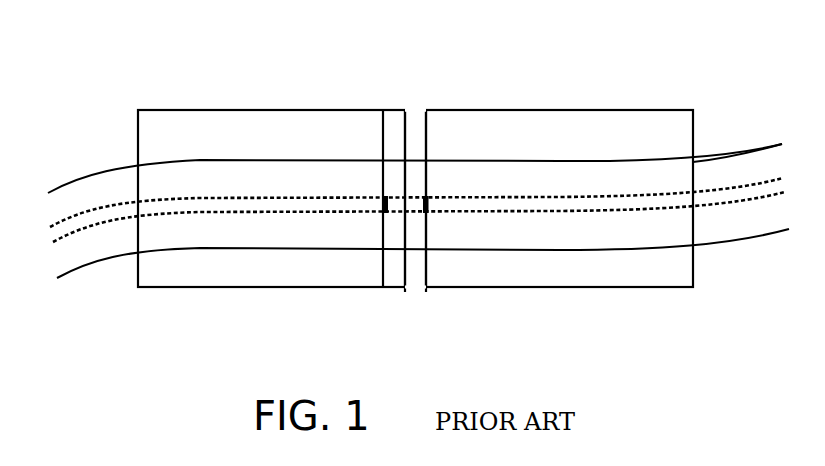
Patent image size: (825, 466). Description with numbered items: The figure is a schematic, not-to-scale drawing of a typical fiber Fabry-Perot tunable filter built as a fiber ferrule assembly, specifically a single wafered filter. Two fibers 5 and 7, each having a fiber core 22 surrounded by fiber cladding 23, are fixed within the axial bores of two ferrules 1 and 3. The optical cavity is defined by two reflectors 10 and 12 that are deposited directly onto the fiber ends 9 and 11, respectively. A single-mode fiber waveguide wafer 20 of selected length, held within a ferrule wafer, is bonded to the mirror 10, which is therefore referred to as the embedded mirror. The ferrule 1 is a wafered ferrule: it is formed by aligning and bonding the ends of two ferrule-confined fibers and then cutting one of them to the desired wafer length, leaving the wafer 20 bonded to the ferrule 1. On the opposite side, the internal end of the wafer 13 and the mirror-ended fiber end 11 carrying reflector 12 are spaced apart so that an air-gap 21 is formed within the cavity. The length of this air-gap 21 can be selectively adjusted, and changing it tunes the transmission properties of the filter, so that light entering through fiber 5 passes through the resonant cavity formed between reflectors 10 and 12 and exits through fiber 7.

The ferrule 1 is at (172, 263).
The ferrule 3 is at (565, 265).
The fiber 5 is at (93, 183).
The fiber 7 is at (738, 175).
The fiber end 9 is at (380, 227).
The reflector 10 is at (389, 200).
The fiber end 11 is at (426, 288).
The reflector 12 is at (428, 198).
The internal end of the wafer 13 is at (405, 287).
The single-mode fiber waveguide wafer 20 is at (392, 268).
The air-gap 21 is at (405, 107).
The fiber core 22 is at (227, 203).
The fiber cladding 23 is at (288, 175).